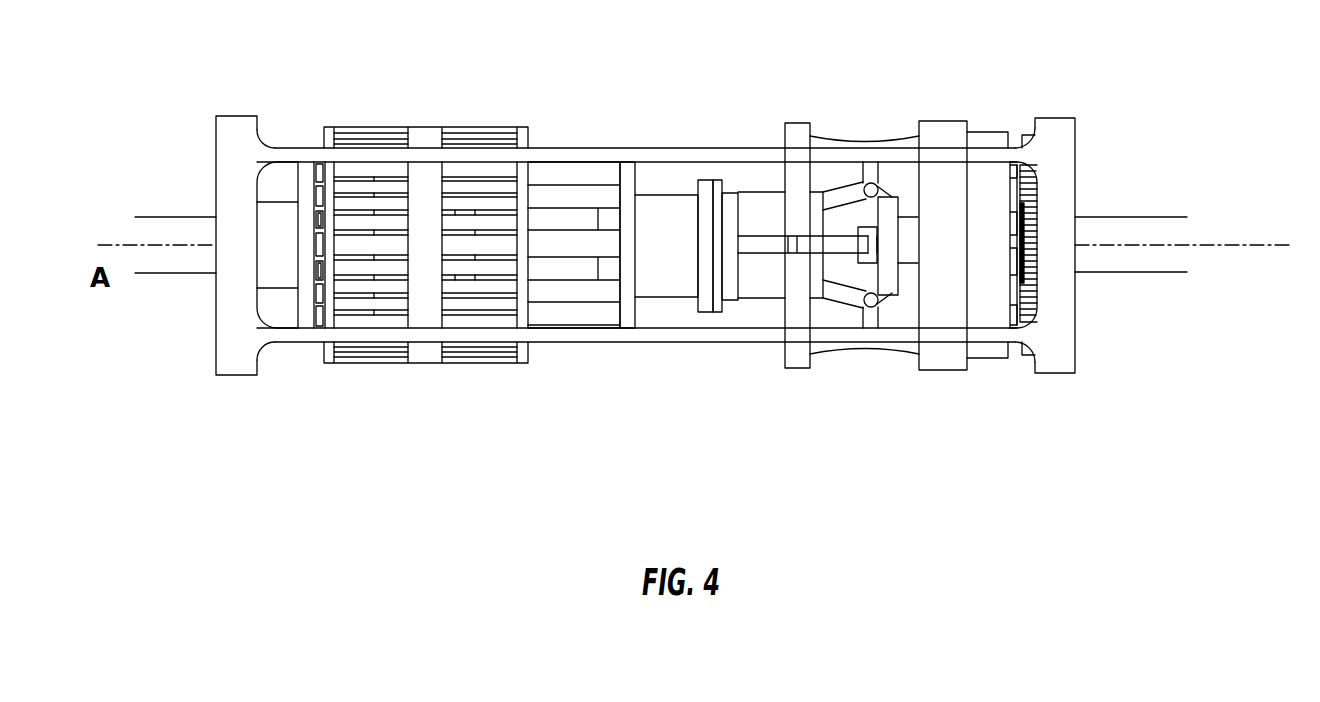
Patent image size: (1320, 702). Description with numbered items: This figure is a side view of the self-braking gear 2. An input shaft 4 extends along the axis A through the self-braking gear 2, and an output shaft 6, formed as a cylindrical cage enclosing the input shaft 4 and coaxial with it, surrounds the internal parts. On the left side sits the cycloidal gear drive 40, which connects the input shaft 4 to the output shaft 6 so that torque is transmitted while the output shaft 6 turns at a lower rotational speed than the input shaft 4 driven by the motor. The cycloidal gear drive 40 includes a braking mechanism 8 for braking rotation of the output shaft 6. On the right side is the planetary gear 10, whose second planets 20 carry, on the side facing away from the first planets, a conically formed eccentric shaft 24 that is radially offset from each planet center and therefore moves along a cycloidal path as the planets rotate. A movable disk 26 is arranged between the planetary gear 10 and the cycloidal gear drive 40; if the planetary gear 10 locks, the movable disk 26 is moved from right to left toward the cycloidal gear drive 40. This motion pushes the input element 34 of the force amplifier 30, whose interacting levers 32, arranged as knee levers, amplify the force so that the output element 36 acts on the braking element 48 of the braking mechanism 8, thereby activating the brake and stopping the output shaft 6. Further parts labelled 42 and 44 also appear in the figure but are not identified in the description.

The self-braking gear 2 is at (236, 442).
The input shaft 4 is at (1140, 255).
The output shaft 6 is at (233, 335).
The braking mechanism 8 is at (656, 188).
The planetary gear 10 is at (1018, 378).
The second planets 20 is at (1027, 135).
The eccentric shaft 24 is at (1012, 172).
The movable disk 26 is at (990, 137).
The force amplifier 30 is at (836, 388).
The levers 32 is at (880, 117).
The input element 34 is at (937, 355).
The output element 36 is at (728, 287).
The cycloidal gear drive 40 is at (553, 122).
The stator 42 is at (470, 381).
The rotor 44 is at (600, 174).
The braking element 48 is at (660, 283).